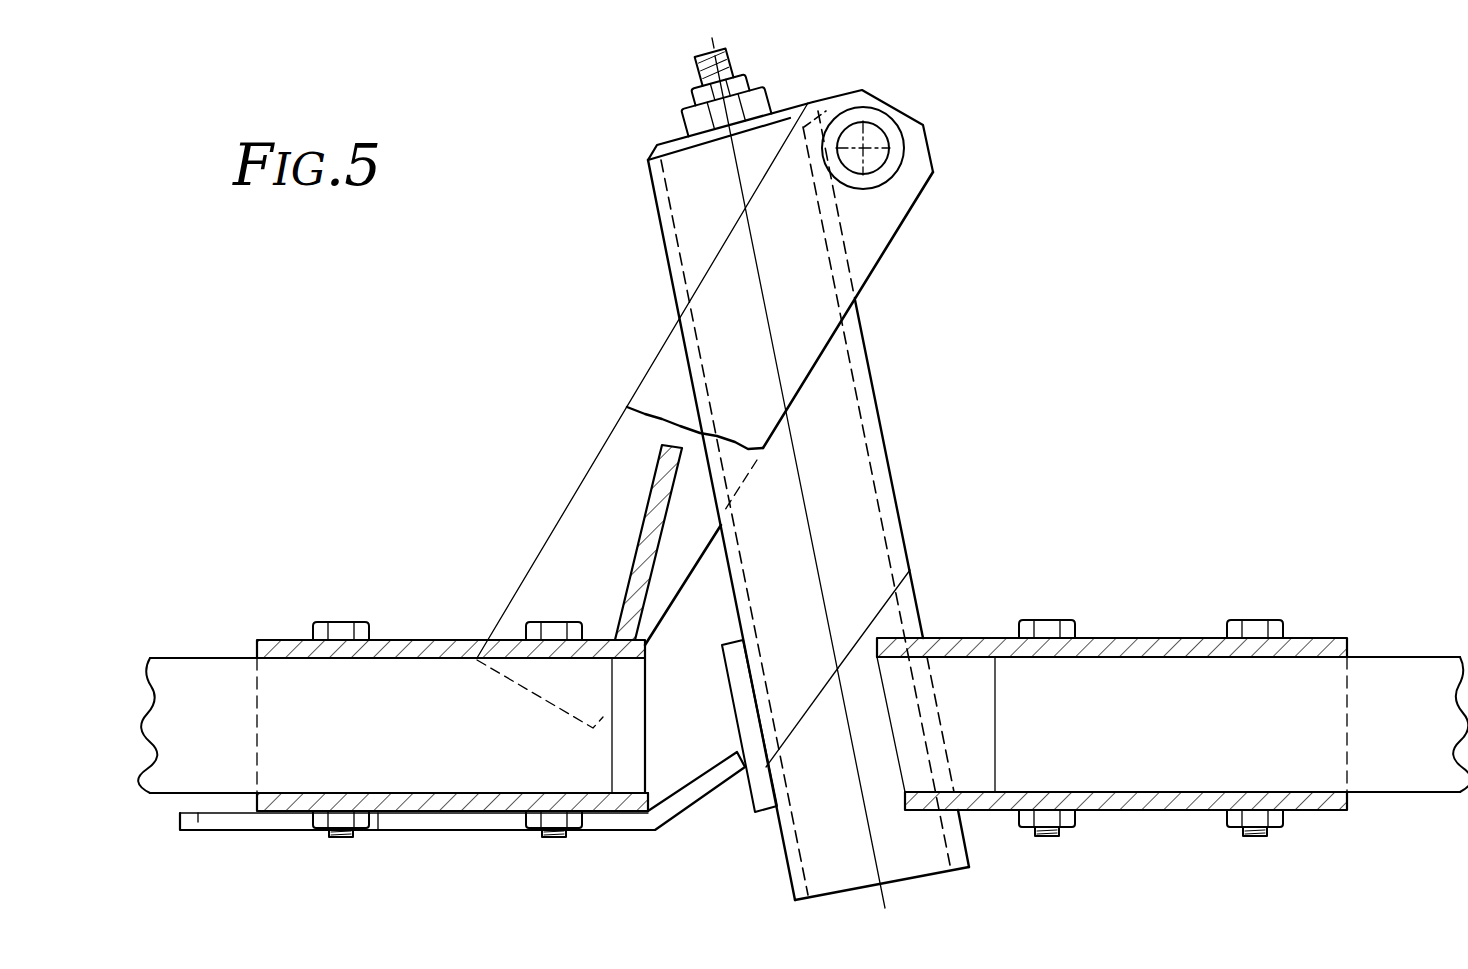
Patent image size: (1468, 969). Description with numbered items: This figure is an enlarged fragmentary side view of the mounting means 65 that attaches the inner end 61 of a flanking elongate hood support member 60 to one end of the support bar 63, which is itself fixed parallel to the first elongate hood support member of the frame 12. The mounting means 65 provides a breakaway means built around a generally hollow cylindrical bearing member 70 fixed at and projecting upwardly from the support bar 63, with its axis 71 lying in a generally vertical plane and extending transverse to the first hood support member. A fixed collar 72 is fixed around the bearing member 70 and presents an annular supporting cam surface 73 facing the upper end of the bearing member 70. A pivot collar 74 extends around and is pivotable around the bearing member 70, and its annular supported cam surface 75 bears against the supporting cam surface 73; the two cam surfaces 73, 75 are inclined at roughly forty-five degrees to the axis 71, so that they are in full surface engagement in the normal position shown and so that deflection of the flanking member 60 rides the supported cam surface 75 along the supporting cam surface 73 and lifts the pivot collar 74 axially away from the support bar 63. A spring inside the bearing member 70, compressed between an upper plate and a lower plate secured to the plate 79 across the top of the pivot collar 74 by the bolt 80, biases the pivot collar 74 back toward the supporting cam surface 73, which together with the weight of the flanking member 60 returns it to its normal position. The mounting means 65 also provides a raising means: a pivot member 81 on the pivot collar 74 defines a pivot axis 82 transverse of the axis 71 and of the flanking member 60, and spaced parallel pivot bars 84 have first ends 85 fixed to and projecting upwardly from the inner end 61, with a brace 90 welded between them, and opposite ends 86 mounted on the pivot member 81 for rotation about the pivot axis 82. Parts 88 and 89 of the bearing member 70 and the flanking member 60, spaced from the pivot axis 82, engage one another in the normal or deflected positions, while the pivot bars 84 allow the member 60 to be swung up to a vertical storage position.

The frame 12 is at (1157, 637).
The flanking elongate hood support member 60 is at (202, 670).
The inner end 61 is at (463, 770).
The support bar 63 is at (1423, 663).
The mounting means 65 is at (950, 397).
The bearing member 70 is at (868, 484).
The axis 71 is at (887, 907).
The fixed collar 72 is at (913, 603).
The supporting cam surface 73 is at (882, 608).
The pivot collar 74 is at (662, 226).
The supported cam surface 75 is at (796, 728).
The plate 79 is at (665, 140).
The bolt 80 is at (740, 80).
The pivot member 81 is at (895, 130).
The pivot axis 82 is at (866, 146).
The pivot bars 84 is at (866, 255).
The first ends 85 is at (510, 626).
The opposite ends 86 is at (930, 174).
The part 88 is at (693, 798).
The part 89 is at (770, 808).
The brace 90 is at (653, 488).